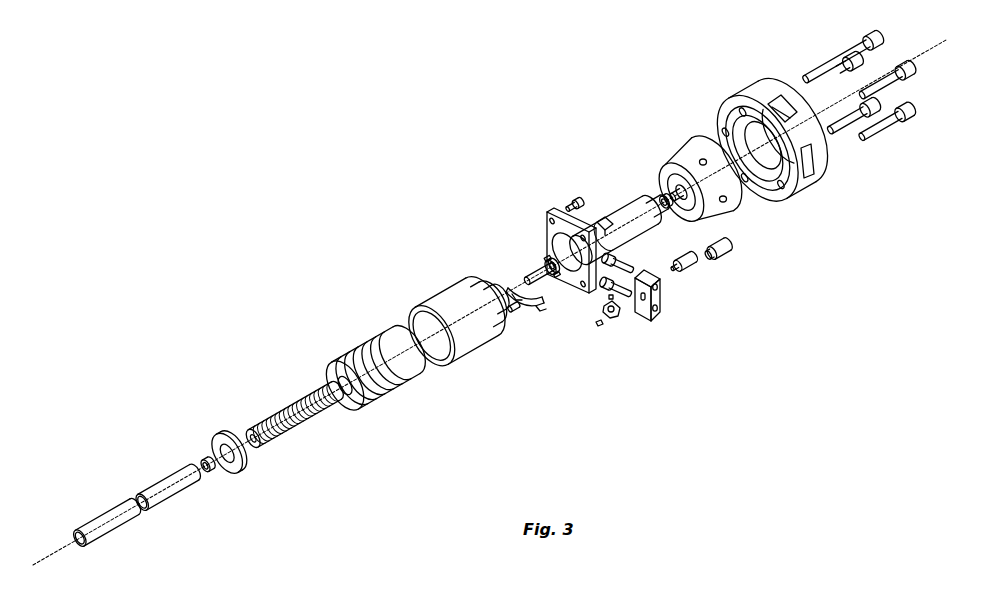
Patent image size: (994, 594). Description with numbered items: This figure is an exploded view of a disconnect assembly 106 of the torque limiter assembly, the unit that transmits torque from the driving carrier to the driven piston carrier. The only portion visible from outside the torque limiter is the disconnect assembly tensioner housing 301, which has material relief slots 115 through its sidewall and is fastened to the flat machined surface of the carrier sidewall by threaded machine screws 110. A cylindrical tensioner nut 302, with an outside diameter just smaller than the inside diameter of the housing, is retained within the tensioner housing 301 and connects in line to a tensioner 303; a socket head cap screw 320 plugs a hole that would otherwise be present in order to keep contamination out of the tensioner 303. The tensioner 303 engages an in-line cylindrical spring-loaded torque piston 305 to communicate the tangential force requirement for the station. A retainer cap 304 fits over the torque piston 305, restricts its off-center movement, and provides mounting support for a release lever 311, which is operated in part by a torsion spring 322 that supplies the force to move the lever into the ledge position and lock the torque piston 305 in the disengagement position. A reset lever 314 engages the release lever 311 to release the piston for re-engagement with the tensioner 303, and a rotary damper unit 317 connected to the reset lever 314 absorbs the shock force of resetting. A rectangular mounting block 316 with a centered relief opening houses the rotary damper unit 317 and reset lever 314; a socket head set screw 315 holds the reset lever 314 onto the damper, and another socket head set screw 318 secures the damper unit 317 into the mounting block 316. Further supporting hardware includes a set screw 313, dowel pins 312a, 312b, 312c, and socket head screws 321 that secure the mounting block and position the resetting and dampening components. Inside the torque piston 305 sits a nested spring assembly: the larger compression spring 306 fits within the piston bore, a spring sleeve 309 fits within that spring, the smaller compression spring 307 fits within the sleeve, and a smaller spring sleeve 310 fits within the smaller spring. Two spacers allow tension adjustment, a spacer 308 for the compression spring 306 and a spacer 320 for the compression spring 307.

The disconnect assembly 106 is at (400, 238).
The threaded machine screws 110 is at (814, 62).
The material relief slots 115 is at (775, 97).
The disconnect assembly tensioner housing 301 is at (797, 186).
The tensioner nut 302 is at (700, 150).
The tensioner 303 is at (642, 196).
The retainer cap 304 is at (548, 214).
The torque piston 305 is at (483, 347).
The compression spring 306 is at (392, 392).
The compression spring 307 is at (300, 420).
The spacer 308 is at (218, 445).
The spring sleeve 309 is at (162, 480).
The spring sleeve 310 is at (100, 520).
The release lever 311 is at (546, 302).
The dowel pin 312a is at (520, 316).
The dowel pin 312b is at (532, 281).
The dowel pin 312c is at (600, 326).
The set screw 313 is at (537, 266).
The reset lever 314 is at (612, 312).
The socket head set screw 315 is at (618, 303).
The mounting block 316 is at (662, 300).
The rotary damper unit 317 is at (697, 276).
The socket head set screw 318 is at (733, 258).
The socket head cap screw / spacer 320 is at (215, 468).
The socket head screws 321 is at (572, 204).
The torsion spring 322 is at (530, 290).